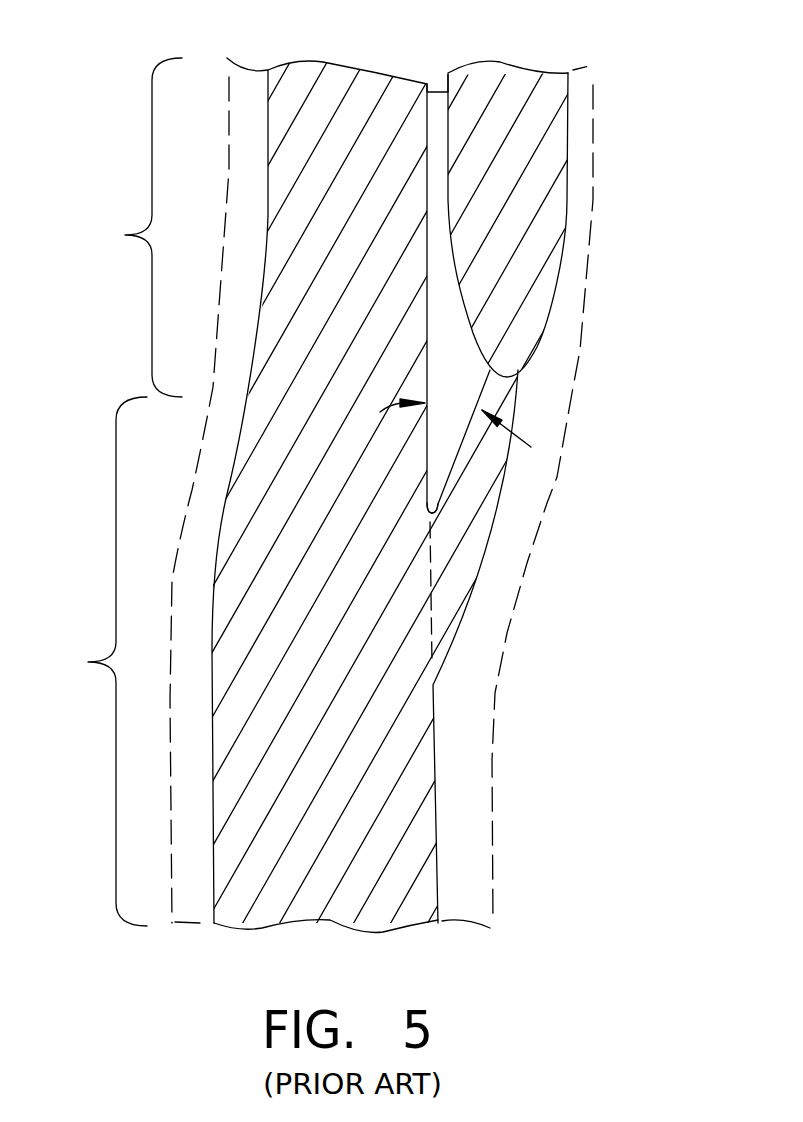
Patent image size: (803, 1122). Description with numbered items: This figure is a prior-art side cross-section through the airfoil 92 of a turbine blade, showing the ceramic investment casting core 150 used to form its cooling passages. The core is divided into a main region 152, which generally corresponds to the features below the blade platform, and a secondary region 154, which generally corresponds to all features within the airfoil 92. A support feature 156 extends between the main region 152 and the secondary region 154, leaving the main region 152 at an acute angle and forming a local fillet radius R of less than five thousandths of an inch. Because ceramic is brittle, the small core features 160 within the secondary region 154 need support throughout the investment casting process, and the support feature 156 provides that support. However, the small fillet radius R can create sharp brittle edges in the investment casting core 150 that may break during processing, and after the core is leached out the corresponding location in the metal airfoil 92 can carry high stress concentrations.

The investment casting core 150 is at (327, 97).
The main region 152 is at (89, 661).
The secondary region 154 is at (125, 227).
The support feature 156 is at (457, 523).
The small core features 160 is at (527, 267).
The airfoil 92 is at (597, 138).
The local fillet radius R is at (438, 507).